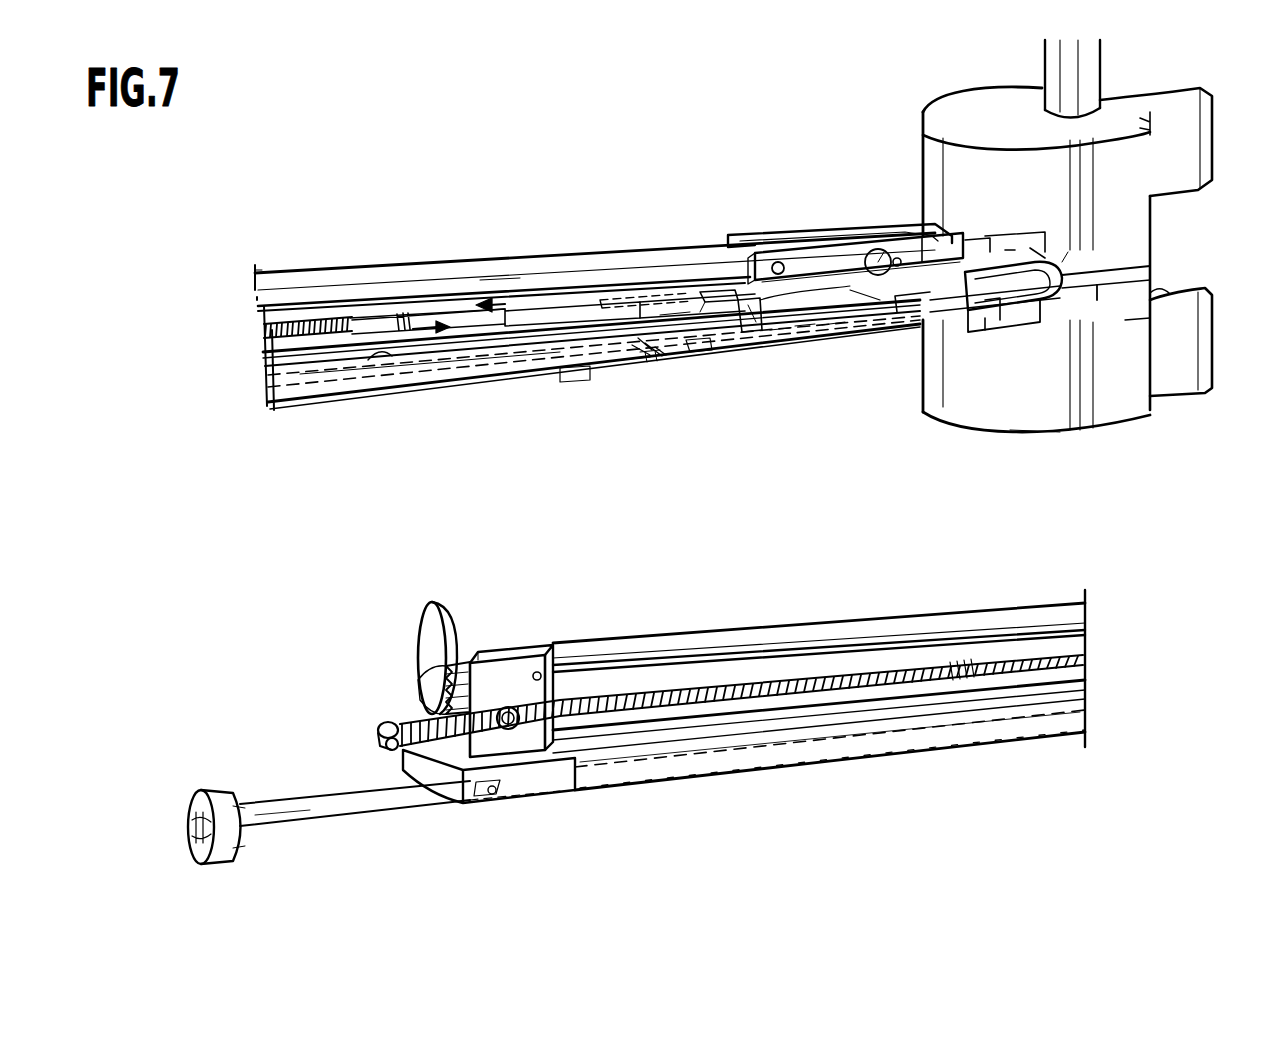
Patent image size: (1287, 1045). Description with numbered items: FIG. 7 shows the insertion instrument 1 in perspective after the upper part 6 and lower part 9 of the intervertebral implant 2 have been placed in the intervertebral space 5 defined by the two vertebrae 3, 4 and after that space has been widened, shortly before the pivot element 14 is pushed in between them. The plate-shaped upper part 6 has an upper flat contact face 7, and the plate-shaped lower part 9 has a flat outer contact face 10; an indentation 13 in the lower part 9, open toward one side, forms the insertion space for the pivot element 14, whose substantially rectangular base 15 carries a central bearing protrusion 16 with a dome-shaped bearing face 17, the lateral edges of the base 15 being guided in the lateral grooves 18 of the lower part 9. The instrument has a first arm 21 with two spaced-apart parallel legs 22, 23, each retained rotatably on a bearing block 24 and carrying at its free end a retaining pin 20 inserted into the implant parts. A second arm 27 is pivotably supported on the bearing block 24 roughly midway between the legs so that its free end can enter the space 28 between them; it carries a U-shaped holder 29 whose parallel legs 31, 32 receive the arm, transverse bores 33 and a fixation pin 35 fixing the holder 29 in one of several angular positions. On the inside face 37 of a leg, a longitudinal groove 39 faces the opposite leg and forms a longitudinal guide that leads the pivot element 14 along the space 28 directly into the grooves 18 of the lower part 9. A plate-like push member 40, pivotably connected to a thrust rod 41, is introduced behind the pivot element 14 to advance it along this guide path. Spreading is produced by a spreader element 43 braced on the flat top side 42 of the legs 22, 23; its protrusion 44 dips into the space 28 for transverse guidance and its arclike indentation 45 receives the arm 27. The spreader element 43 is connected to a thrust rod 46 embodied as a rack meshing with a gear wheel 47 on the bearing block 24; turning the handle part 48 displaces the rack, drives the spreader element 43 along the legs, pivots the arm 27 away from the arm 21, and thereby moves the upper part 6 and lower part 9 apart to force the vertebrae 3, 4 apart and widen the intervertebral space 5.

The insertion instrument 1 is at (362, 232).
The intervertebral implant 2 is at (1072, 256).
The vertebra 3 is at (1000, 110).
The vertebra 4 is at (1024, 416).
The intervertebral space 5 is at (1100, 272).
The upper part 6 is at (1010, 244).
The upper flat contact face 7 is at (1035, 245).
The lower part 9 is at (1078, 310).
The flat outer contact face 10 is at (1040, 315).
The indentation 13 is at (1090, 308).
The pivot element 14 is at (778, 346).
The base 15 is at (800, 338).
The bearing protrusion 16 is at (830, 340).
The dome-shaped bearing face 17 is at (862, 292).
The lateral grooves 18 is at (1148, 320).
The retaining pins 20 is at (975, 247).
The first arm 21 is at (540, 386).
The leg 22 is at (838, 262).
The leg 23 is at (571, 368).
The bearing block 24 is at (517, 680).
The second arm 27 is at (484, 264).
The space 28 is at (500, 314).
The U-shaped holder 29 is at (907, 214).
The leg of holder 31 is at (757, 272).
The leg of holder 32 is at (847, 243).
The transverse bores 33 is at (878, 247).
The fixation pin 35 is at (843, 277).
The inside face 37 is at (427, 345).
The longitudinal groove 39 is at (384, 356).
The push member 40 is at (700, 359).
The thrust rod 41 is at (629, 359).
The flat top side 42 is at (900, 300).
The spreader element 43 is at (712, 287).
The protrusion 44 is at (746, 324).
The indentation 45 is at (712, 278).
The thrust rod 46 is at (312, 338).
The gear wheel 47 is at (445, 685).
The handle part 48 is at (430, 640).